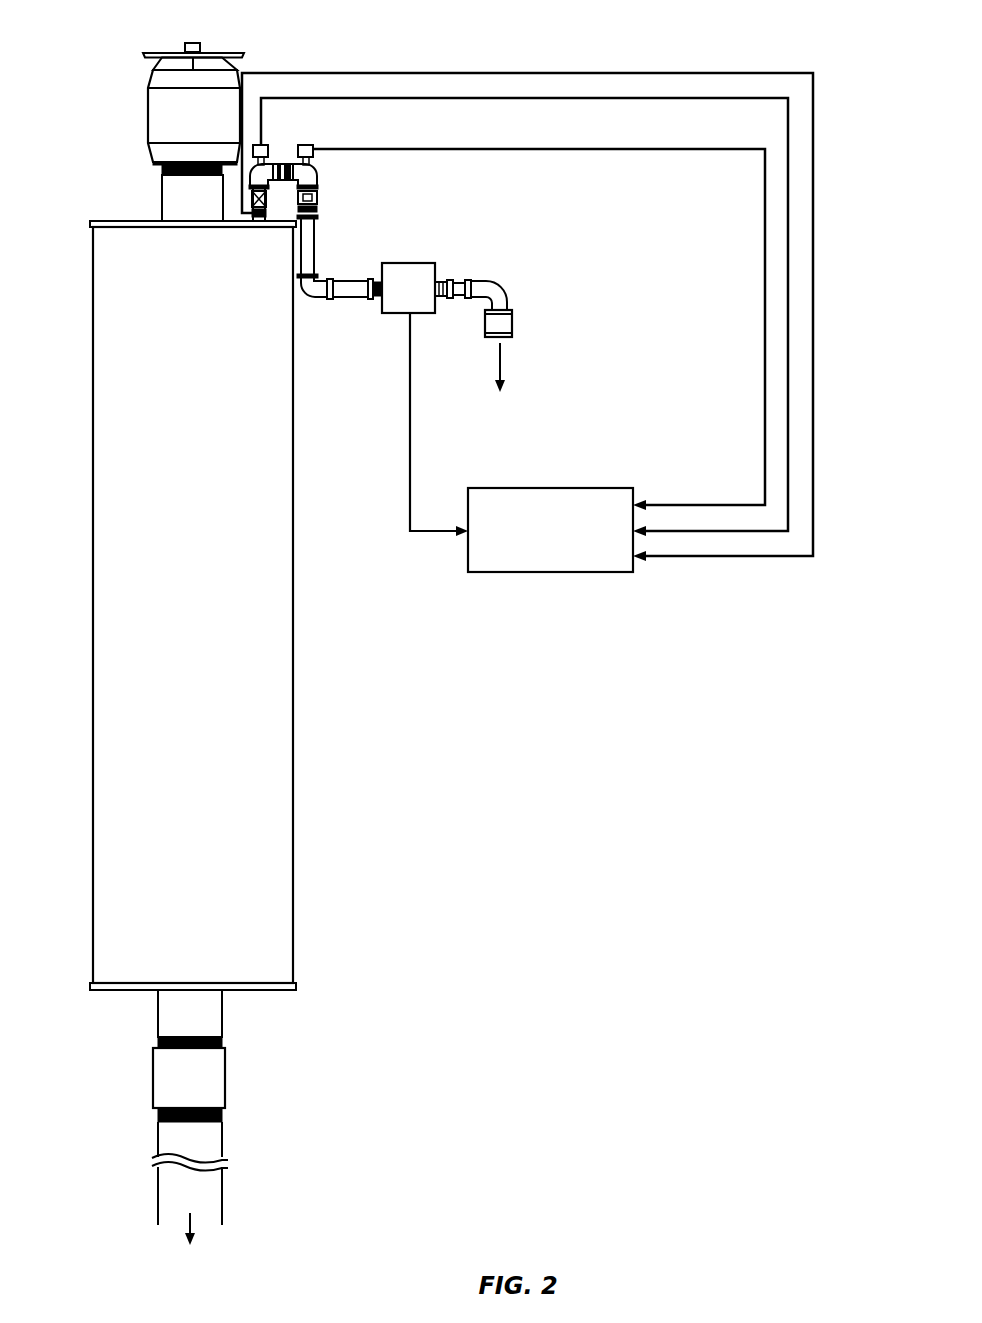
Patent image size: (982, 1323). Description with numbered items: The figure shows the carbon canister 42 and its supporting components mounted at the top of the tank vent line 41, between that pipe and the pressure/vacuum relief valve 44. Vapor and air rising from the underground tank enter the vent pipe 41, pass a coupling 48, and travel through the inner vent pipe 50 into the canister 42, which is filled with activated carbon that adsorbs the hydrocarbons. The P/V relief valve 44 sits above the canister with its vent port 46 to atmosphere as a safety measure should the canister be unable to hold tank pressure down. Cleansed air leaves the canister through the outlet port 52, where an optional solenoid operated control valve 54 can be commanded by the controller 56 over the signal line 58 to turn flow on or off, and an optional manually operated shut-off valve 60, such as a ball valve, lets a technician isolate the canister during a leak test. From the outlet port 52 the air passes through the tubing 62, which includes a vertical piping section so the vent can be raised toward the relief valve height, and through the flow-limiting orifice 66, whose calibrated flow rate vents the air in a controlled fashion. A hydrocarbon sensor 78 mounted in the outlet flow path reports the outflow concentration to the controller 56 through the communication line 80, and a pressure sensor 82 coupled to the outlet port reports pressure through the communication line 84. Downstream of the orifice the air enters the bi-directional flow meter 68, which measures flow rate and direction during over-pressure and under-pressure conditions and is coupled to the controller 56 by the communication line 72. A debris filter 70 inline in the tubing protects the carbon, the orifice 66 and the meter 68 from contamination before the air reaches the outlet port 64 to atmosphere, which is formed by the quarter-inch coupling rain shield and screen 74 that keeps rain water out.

The tank vent line 41 is at (222, 1138).
The carbon canister 42 is at (293, 635).
The pressure/vacuum relief valve 44 is at (150, 112).
The vent port 46 is at (183, 47).
The coupling 48 is at (225, 1072).
The inner vent pipe 50 is at (163, 195).
The outlet port 52 is at (267, 222).
The solenoid operated control valve 54 is at (258, 217).
The controller 56 is at (537, 555).
The signal line 58 is at (552, 73).
The manually operated shut-off valve 60 is at (258, 198).
The tubing 62 is at (284, 165).
The outlet port to atmosphere 64 is at (508, 337).
The flow-limiting orifice 66 is at (318, 195).
The bi-directional flow meter 68 is at (415, 263).
The debris filter 70 is at (473, 299).
The communication line 72 is at (430, 533).
The rain shield and screen 74 is at (512, 322).
The hydrocarbon sensor 78 is at (262, 145).
The communication line 80 is at (516, 99).
The pressure sensor 82 is at (310, 144).
The communication line 84 is at (613, 149).